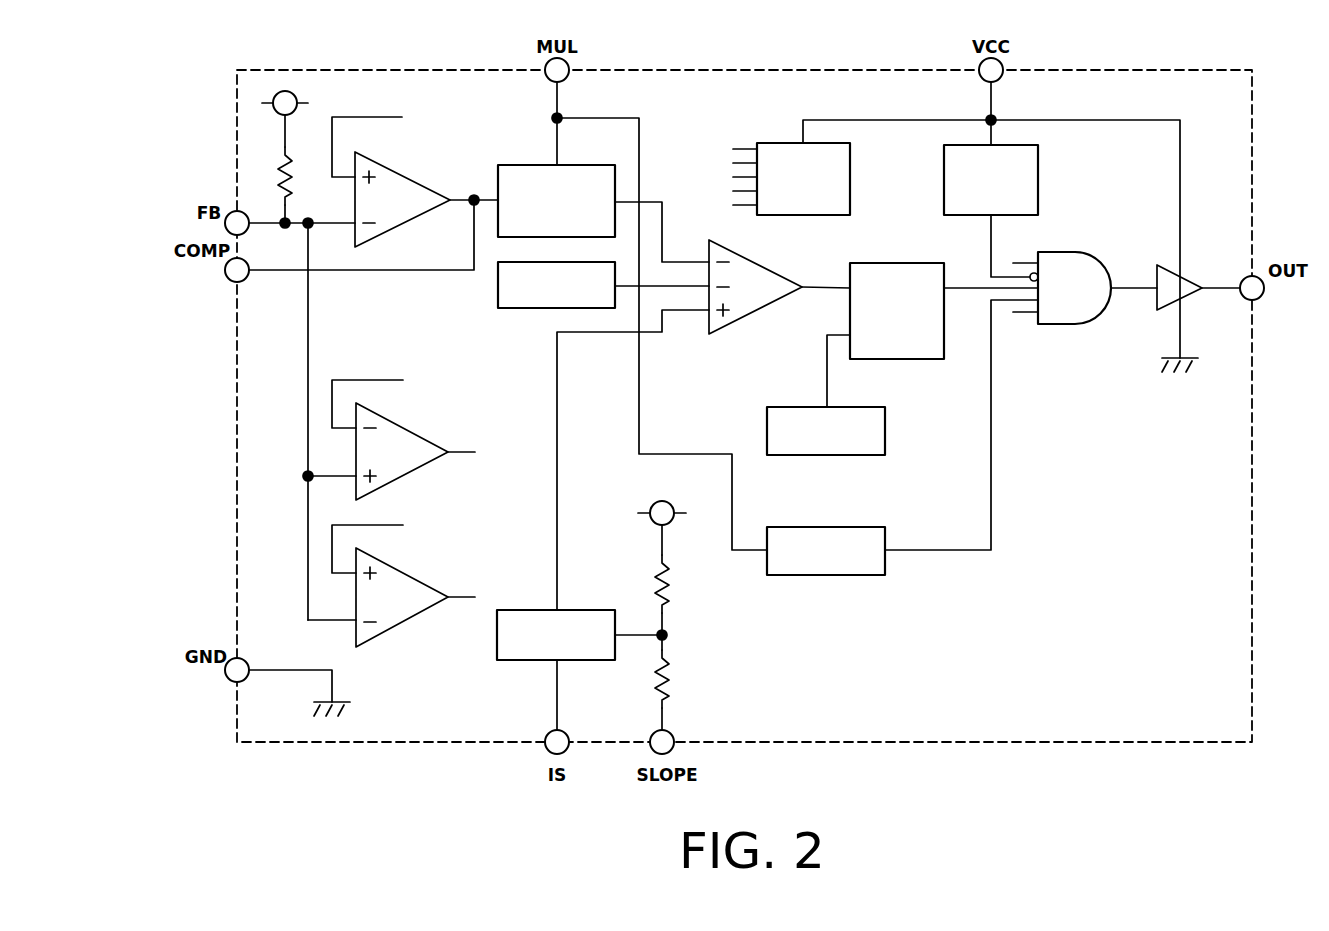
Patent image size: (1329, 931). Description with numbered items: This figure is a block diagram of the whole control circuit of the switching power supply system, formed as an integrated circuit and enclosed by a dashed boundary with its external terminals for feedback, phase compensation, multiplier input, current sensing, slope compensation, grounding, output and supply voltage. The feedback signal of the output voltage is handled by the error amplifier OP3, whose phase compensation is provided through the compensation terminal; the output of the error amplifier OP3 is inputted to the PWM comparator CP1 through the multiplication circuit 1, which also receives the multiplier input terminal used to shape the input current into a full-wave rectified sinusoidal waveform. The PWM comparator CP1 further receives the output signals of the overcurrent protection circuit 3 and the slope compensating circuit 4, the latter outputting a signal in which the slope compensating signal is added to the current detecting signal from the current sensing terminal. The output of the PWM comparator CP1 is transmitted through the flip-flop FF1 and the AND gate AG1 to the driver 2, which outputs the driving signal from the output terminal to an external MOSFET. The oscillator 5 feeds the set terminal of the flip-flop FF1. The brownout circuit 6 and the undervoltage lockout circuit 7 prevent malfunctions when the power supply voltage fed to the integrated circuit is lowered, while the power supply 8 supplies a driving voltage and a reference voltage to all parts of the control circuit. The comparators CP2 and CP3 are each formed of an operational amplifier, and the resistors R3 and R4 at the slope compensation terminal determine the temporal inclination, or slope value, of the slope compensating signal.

The multiplication circuit 1 is at (522, 165).
The driver 2 is at (1157, 308).
The overcurrent protection circuit (OCP) 3 is at (522, 308).
The slope compensating circuit 4 is at (577, 608).
The oscillator 5 is at (885, 430).
The Brownout circuit 6 is at (826, 527).
The UVLO 7 is at (1040, 178).
The power supply 8 is at (852, 178).
The error amplifier OP3 is at (398, 173).
The PWM comparator CP1 is at (760, 262).
The comparator CP2 is at (403, 428).
The comparator CP3 is at (403, 573).
The flip-flop FF1 is at (883, 263).
The AND gate AG1 is at (1085, 248).
The resistor R3 is at (680, 583).
The resistor R4 is at (680, 680).